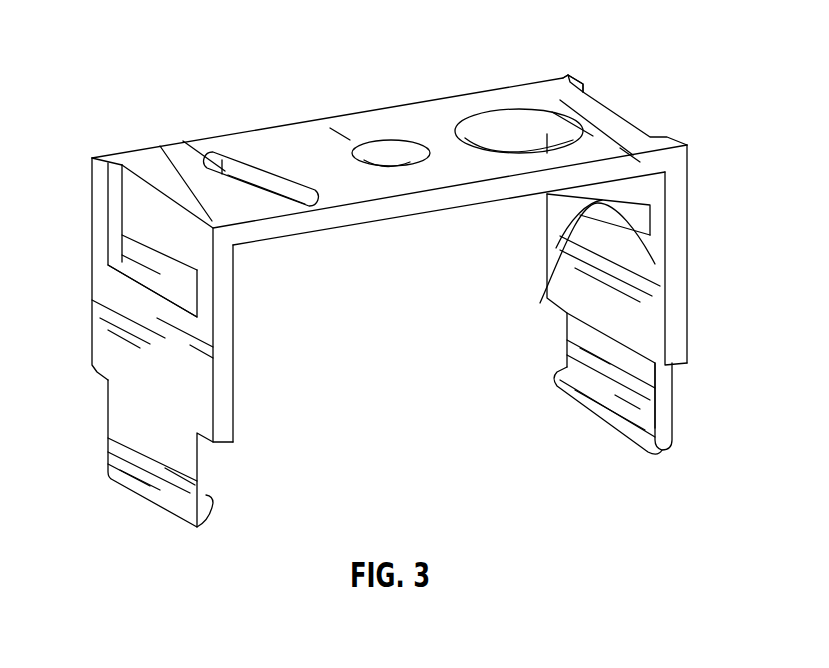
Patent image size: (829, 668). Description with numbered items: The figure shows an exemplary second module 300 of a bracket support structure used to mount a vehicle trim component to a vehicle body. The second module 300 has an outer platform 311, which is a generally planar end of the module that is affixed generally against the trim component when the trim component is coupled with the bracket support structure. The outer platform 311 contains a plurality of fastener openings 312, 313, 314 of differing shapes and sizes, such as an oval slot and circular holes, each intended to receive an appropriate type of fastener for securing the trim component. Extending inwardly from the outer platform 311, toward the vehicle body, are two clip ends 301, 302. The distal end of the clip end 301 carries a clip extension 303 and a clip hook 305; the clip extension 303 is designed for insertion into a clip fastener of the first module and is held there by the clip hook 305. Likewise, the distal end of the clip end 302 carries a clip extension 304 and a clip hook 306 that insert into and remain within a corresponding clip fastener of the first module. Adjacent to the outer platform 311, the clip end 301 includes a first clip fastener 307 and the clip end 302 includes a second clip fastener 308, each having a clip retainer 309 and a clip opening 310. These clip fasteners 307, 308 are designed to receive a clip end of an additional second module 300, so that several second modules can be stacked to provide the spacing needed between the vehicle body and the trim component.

The second module 300 is at (598, 41).
The clip end 301 is at (92, 365).
The clip end 302 is at (688, 307).
The clip extension 303 is at (108, 433).
The clip extension 304 is at (673, 400).
The clip hook 305 is at (213, 498).
The clip hook 306 is at (610, 413).
The first clip fastener 307 is at (140, 190).
The second clip fastener 308 is at (616, 108).
The clip retainer 309 is at (122, 235).
The clip opening 310 is at (155, 262).
The outer platform 311 is at (310, 120).
The fastener opening 312 is at (238, 166).
The fastener opening 313 is at (386, 153).
The fastener opening 314 is at (509, 147).